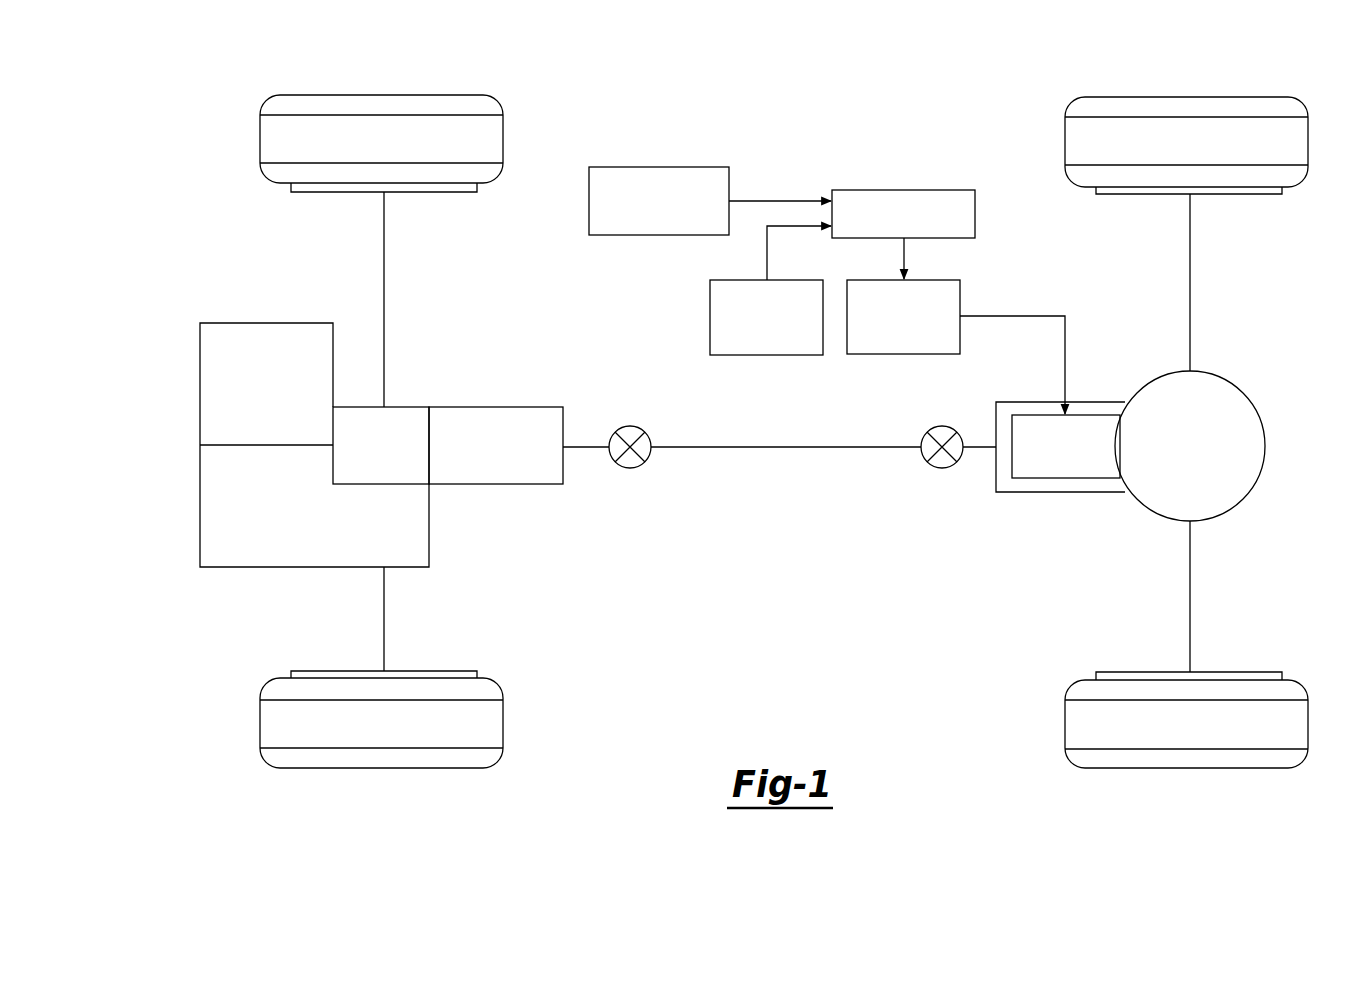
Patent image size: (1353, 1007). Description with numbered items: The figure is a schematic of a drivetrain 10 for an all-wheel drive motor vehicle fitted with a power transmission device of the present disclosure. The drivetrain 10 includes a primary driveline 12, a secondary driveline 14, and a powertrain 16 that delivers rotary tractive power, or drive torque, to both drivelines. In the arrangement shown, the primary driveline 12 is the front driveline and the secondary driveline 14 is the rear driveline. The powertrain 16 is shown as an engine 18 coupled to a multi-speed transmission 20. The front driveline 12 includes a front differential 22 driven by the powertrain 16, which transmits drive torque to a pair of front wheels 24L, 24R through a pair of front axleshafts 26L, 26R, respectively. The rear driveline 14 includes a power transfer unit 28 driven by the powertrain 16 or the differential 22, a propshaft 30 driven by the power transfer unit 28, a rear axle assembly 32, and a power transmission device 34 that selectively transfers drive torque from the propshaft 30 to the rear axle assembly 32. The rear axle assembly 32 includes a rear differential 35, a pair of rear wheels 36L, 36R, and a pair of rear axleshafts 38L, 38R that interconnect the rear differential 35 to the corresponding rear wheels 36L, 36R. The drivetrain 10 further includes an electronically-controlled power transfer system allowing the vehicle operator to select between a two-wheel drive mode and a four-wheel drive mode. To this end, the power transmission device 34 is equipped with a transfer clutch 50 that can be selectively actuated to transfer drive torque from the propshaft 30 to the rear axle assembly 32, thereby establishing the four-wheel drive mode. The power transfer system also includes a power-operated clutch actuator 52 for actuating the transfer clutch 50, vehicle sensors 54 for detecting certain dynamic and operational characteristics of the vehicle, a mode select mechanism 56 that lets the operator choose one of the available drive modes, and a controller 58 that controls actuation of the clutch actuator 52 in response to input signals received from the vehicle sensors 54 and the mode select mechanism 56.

The drivetrain 10 is at (839, 113).
The primary driveline 12 is at (461, 336).
The secondary driveline 14 is at (839, 470).
The powertrain 16 is at (280, 571).
The engine 18 is at (270, 396).
The multi-speed transmission 20 is at (270, 529).
The front differential 22 is at (392, 458).
The front wheel 24R is at (300, 94).
The front wheel 24L is at (412, 770).
The front axleshaft 26R is at (384, 262).
The front axleshaft 26L is at (384, 615).
The power transfer unit 28 is at (515, 458).
The propshaft 30 is at (763, 448).
The rear axle assembly 32 is at (1198, 360).
The power transmission device 34 is at (1093, 482).
The rear differential 35 is at (1252, 402).
The rear wheel 36R is at (1133, 96).
The rear wheel 36L is at (1177, 770).
The rear axleshaft 38R is at (1190, 256).
The rear axleshaft 38L is at (1190, 578).
The transfer clutch 50 is at (1097, 415).
The clutch actuator 52 is at (870, 355).
The vehicle sensors 54 is at (710, 325).
The mode select mechanism 56 is at (638, 165).
The controller 58 is at (952, 190).